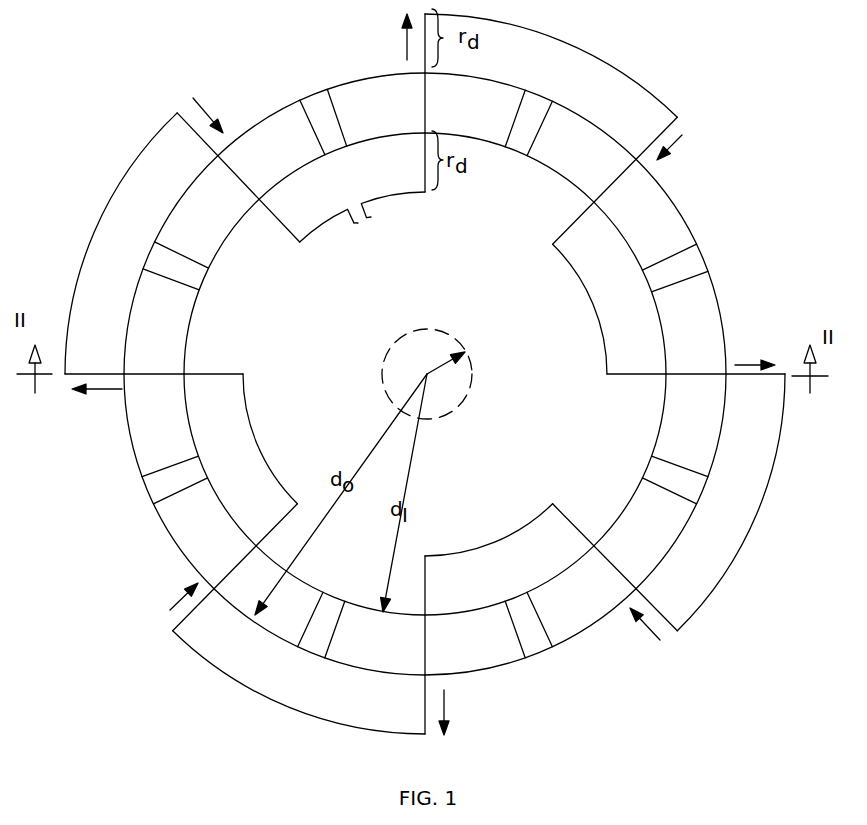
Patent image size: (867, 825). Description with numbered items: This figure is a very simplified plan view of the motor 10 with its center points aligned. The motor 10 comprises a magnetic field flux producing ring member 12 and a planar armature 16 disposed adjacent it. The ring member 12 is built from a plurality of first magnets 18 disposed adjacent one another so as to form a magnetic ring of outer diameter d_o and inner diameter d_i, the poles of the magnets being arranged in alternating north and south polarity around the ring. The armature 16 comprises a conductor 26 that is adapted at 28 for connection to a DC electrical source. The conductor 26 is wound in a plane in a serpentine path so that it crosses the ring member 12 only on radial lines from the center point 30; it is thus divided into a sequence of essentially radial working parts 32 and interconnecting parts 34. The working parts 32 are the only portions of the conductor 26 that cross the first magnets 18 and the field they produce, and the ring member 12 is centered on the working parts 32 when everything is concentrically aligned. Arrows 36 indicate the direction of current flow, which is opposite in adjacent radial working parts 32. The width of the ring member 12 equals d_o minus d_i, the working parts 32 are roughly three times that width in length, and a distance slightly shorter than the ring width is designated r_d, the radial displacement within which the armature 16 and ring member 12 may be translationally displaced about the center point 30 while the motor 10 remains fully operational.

The motor 10 is at (437, 378).
The ring member 12 is at (690, 230).
The armature 16 is at (722, 502).
The first magnets 18 is at (493, 672).
The conductor 26 is at (730, 568).
The connection point 28 is at (367, 208).
The center point 30 is at (423, 372).
The working parts 32 is at (415, 98).
The interconnecting parts 34 is at (452, 383).
The arrows 36 is at (405, 42).